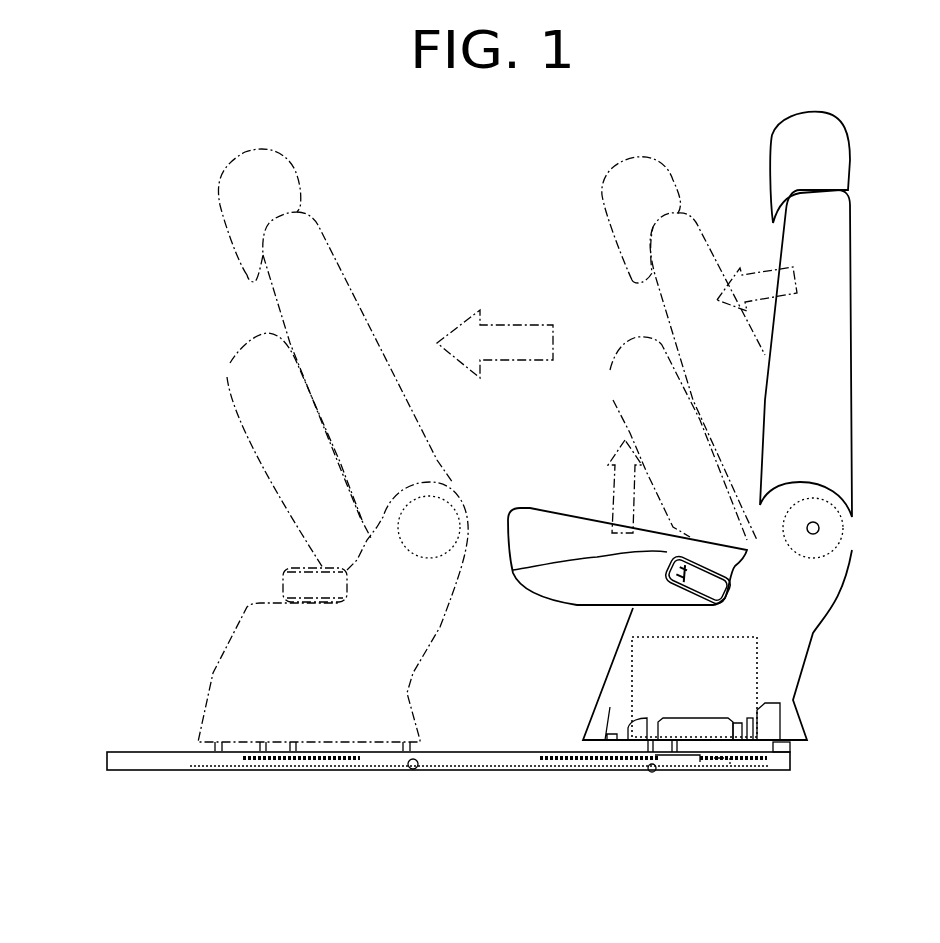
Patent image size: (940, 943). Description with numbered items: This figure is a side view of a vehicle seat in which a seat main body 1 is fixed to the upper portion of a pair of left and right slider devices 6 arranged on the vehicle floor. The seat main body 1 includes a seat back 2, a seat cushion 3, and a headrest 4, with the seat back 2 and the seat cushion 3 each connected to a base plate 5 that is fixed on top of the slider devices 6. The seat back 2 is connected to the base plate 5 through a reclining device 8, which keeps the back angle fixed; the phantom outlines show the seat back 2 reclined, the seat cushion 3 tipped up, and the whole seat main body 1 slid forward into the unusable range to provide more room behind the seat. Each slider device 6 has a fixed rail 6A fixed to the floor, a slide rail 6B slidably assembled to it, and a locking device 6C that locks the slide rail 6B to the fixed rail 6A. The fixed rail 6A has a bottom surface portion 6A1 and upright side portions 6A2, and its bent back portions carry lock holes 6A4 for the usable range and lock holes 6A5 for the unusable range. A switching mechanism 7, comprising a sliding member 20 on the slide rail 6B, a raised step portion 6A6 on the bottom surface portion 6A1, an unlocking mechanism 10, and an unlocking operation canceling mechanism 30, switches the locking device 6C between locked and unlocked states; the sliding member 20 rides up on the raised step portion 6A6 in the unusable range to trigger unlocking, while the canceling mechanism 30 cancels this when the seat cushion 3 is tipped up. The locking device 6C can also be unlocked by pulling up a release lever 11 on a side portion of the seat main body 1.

The seat main body 1 is at (574, 226).
The seat back 2 is at (700, 228).
The seat cushion 3 is at (624, 363).
The headrest 4 is at (657, 167).
The base plate 5 is at (815, 605).
The slider device 6 is at (546, 710).
The fixed rail 6A is at (462, 752).
The bottom surface portion 6A1 is at (660, 775).
The side portions 6A2 is at (608, 770).
The lock holes 6A4 is at (572, 770).
The lock holes 6A5 is at (357, 763).
The raised step portion 6A6 is at (413, 770).
The slide rail 6B is at (773, 745).
The locking device 6C is at (663, 757).
The switching mechanism 7 is at (618, 674).
The unlocking mechanism 10 is at (694, 687).
The unlocking operation canceling mechanism 30 is at (668, 672).
The reclining device 8 is at (838, 528).
The release lever 11 is at (540, 559).
The sliding member 20 is at (727, 767).